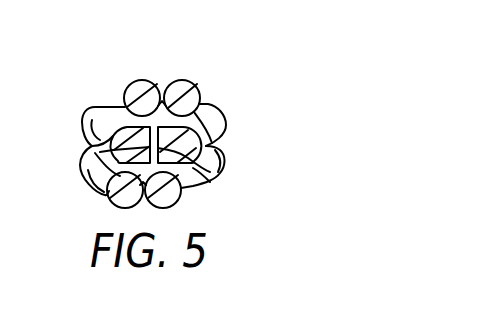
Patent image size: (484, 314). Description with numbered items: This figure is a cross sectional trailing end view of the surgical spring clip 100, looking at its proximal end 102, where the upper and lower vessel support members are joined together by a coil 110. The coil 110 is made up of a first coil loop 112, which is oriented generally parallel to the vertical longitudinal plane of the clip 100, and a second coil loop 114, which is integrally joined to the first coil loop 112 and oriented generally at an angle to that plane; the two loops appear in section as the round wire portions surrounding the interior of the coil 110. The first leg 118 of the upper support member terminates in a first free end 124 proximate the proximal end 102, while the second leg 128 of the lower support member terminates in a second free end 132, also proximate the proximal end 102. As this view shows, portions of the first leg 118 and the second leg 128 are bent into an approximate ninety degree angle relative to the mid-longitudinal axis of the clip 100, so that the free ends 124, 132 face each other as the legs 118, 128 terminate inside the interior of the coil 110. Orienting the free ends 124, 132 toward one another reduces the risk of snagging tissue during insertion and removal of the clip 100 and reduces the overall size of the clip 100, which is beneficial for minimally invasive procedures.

The surgical spring clip 100 is at (99, 66).
The proximal end 102 is at (247, 105).
The coil 110 is at (140, 80).
The first coil loop 112 is at (190, 90).
The second coil loop 114 is at (115, 203).
The first leg 118 is at (92, 118).
The first free end 124 is at (100, 152).
The second leg 128 is at (205, 165).
The second free end 132 is at (195, 172).